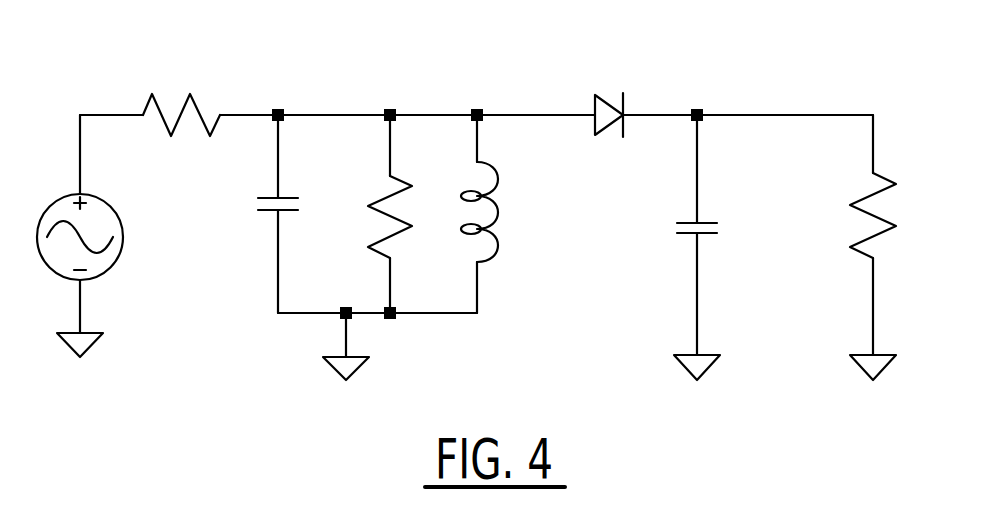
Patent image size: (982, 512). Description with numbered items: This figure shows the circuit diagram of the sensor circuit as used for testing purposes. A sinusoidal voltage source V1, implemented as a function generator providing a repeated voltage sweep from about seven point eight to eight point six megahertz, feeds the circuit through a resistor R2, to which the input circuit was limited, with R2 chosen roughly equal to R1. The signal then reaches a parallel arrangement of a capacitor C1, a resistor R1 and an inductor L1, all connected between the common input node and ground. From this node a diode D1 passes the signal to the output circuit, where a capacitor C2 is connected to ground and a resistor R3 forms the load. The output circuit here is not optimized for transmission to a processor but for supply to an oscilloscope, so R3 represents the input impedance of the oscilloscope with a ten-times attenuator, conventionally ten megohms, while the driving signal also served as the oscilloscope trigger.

The sinusoidal voltage source V1 is at (86, 236).
The resistor R2 is at (181, 94).
The capacitor C1 is at (287, 214).
The resistor R1 is at (409, 214).
The inductor L1 is at (497, 214).
The diode D1 is at (610, 97).
The capacitor C2 is at (705, 247).
The input impedance of the oscilloscope R3 is at (857, 247).